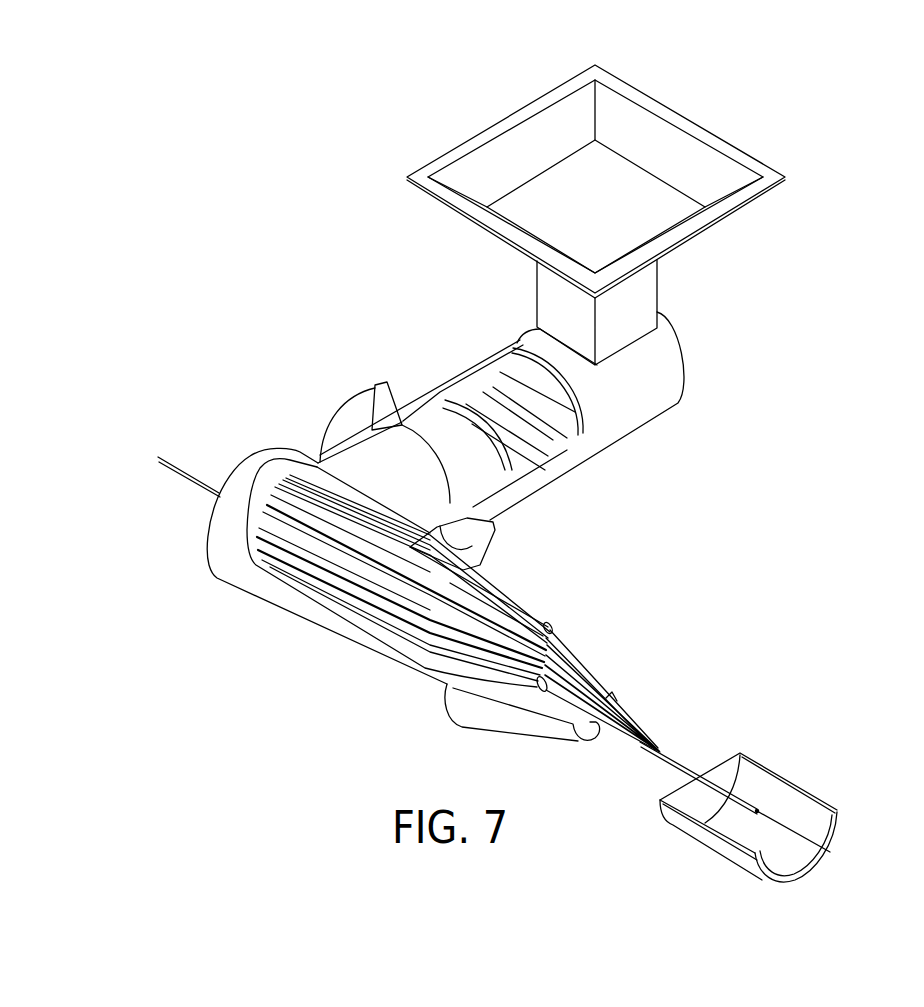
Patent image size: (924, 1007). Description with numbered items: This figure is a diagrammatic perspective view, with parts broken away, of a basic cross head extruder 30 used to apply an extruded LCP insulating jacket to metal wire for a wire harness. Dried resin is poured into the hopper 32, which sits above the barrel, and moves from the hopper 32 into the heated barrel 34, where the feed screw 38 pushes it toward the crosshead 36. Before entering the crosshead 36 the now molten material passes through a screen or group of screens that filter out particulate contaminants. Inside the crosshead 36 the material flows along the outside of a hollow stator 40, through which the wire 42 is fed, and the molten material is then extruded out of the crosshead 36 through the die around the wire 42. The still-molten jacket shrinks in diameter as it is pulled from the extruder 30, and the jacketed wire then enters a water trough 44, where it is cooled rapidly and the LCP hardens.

The cross head extruder 30 is at (303, 289).
The hopper 32 is at (697, 122).
The heated barrel 34 is at (660, 380).
The crosshead 36 is at (388, 677).
The feed screw 38 is at (523, 428).
The hollow stator 40 is at (512, 640).
The wire 42 is at (180, 468).
The water trough 44 is at (778, 773).